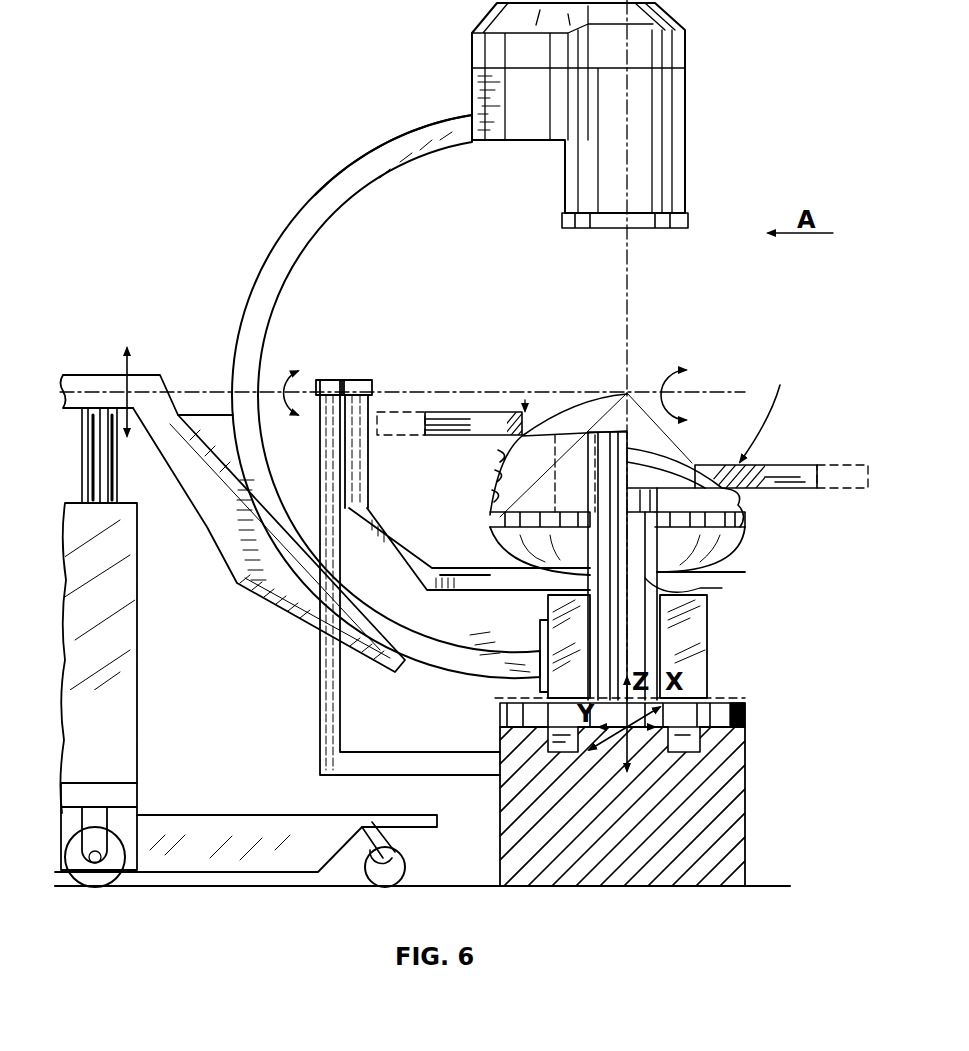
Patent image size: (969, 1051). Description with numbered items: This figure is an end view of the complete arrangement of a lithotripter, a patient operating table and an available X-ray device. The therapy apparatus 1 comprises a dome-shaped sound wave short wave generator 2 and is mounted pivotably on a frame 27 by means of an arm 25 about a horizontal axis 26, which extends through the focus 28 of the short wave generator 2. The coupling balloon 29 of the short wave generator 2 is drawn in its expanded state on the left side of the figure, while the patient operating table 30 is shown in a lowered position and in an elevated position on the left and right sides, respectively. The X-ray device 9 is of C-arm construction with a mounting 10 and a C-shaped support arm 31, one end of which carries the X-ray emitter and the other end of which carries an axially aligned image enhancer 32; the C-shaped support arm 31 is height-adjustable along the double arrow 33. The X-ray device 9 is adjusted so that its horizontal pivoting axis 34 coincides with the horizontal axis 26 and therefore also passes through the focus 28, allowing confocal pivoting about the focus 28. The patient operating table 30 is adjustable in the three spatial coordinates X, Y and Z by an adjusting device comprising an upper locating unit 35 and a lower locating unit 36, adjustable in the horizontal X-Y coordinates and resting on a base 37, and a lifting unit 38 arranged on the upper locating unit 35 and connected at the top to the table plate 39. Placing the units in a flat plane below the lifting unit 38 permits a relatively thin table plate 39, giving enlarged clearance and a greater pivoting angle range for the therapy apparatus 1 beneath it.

The therapy apparatus 1 is at (740, 560).
The short wave generator 2 is at (735, 547).
The X-ray device 9 is at (275, 230).
The mounting 10 is at (690, 618).
The arm 25 is at (385, 530).
The horizontal axis 26 is at (700, 392).
The frame 27 is at (322, 722).
The focus 28 is at (627, 393).
The coupling balloon 29 is at (590, 410).
The patient operating table 30 is at (663, 406).
The C-shaped support arm 31 is at (368, 168).
The image enhancer 32 is at (662, 92).
The double arrow 33 is at (125, 362).
The horizontal pivoting axis 34 is at (222, 378).
The upper locating unit 35 is at (735, 724).
The lower locating unit 36 is at (550, 740).
The base 37 is at (718, 785).
The lifting unit 38 is at (655, 566).
The table plate 39 is at (450, 415).